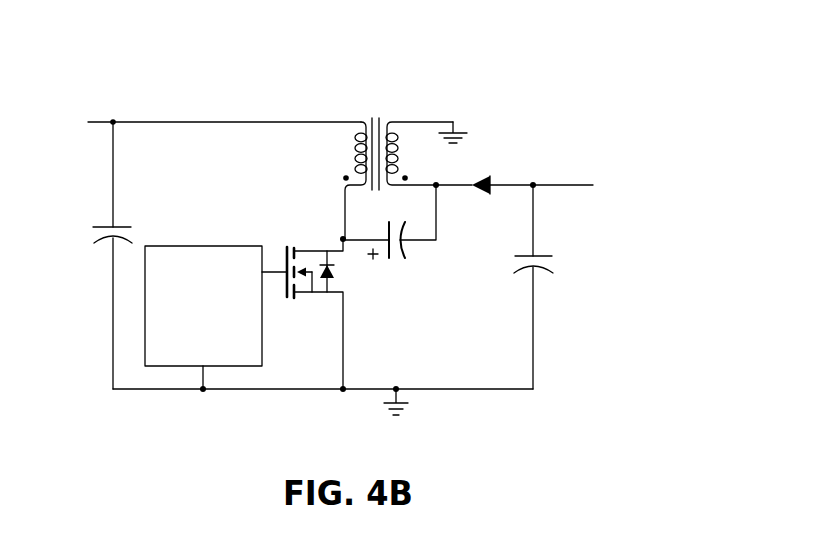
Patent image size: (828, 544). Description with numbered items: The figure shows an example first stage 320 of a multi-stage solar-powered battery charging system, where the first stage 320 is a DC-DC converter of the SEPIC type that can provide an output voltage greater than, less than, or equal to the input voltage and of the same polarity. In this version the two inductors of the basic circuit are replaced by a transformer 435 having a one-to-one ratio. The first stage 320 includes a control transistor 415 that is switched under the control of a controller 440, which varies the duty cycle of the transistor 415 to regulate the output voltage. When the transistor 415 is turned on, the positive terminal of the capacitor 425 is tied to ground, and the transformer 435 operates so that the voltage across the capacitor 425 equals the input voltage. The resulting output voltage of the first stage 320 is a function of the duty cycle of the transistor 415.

The first stage 320 is at (543, 64).
The transformer 435 is at (359, 146).
The controller 440 is at (205, 246).
The control transistor 415 is at (286, 298).
The capacitor 425 is at (406, 258).